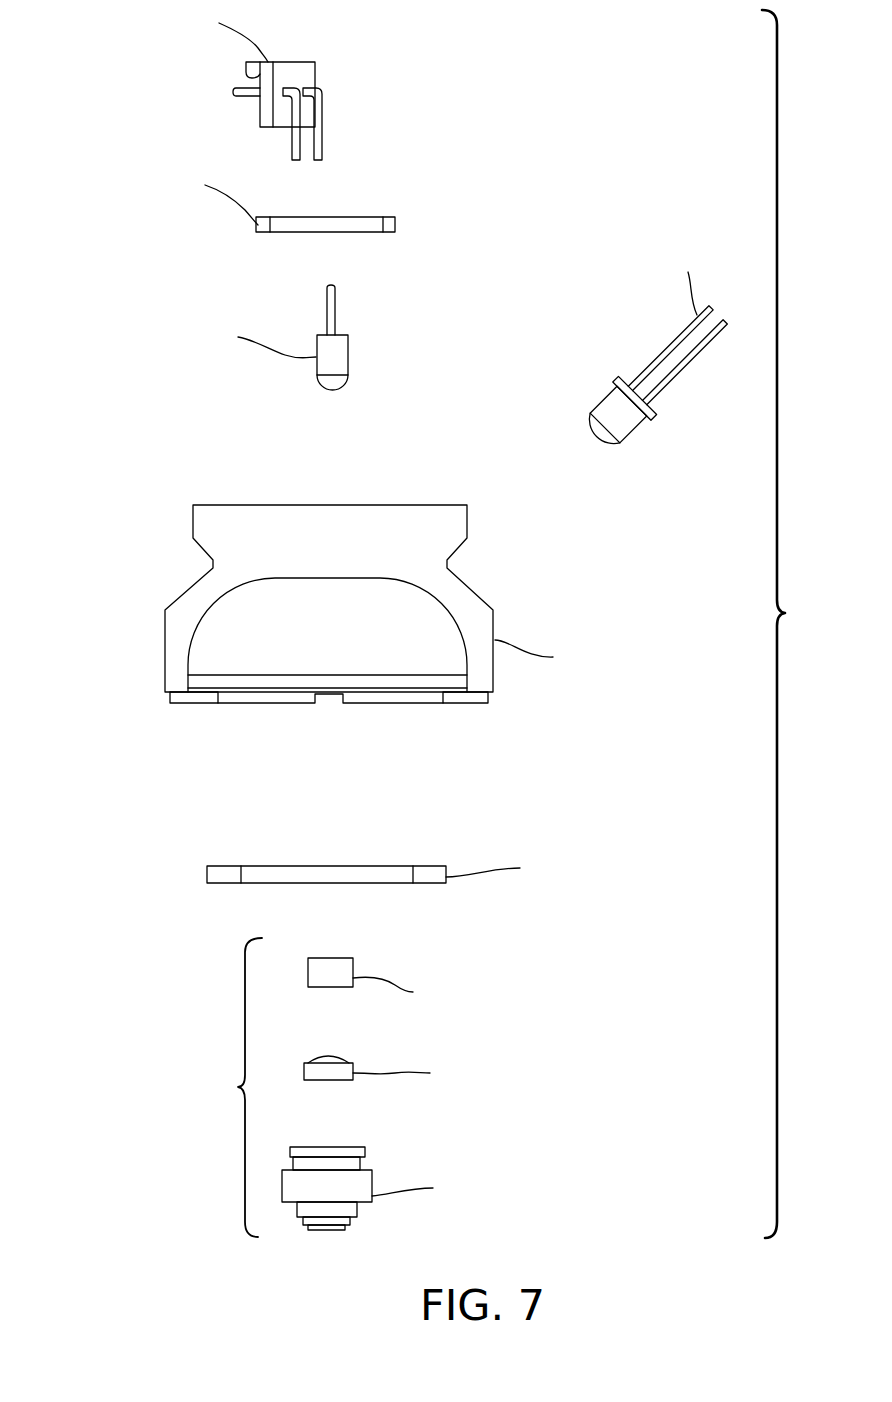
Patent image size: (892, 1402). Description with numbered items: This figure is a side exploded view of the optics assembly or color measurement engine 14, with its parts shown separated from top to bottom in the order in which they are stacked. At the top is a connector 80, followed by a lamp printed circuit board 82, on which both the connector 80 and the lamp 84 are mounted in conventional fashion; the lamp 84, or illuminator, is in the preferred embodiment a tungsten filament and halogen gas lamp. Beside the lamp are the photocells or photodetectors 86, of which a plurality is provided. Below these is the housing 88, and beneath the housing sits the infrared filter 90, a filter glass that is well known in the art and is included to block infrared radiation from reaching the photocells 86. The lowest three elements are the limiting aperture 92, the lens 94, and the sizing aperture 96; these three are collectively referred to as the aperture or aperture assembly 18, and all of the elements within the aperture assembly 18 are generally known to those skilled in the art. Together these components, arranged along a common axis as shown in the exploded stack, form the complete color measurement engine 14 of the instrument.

The optics assembly 14 is at (792, 624).
The aperture assembly 18 is at (234, 1087).
The connector 80 is at (307, 72).
The lamp printed circuit board 82 is at (367, 225).
The lamp 84 is at (340, 355).
The photocells 86 is at (627, 420).
The housing 88 is at (460, 600).
The infrared filter 90 is at (427, 870).
The limiting aperture 92 is at (337, 968).
The lens 94 is at (333, 1068).
The sizing aperture 96 is at (358, 1182).